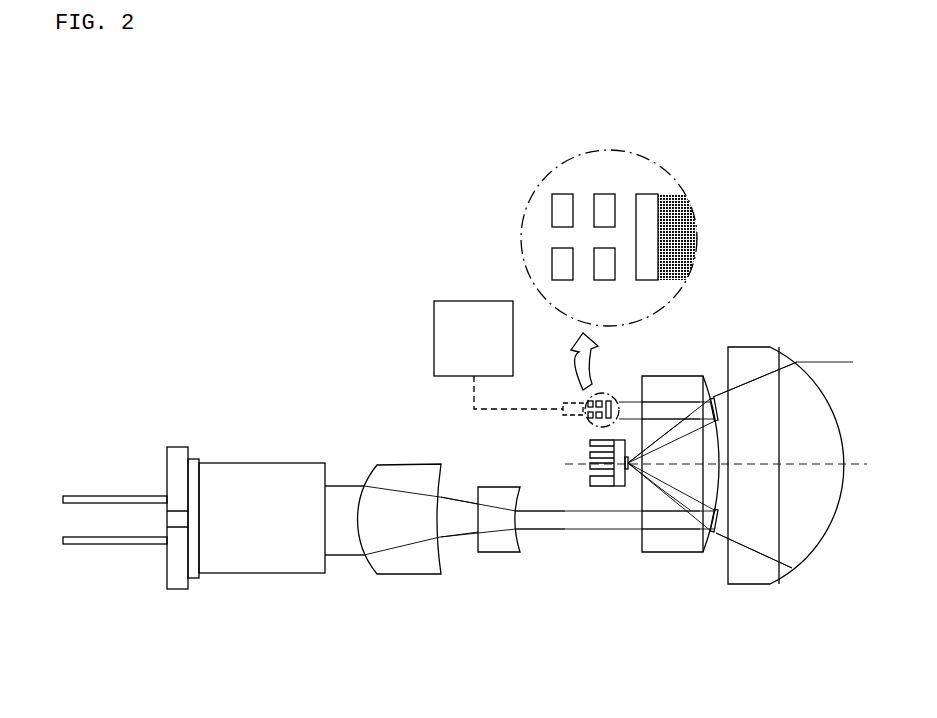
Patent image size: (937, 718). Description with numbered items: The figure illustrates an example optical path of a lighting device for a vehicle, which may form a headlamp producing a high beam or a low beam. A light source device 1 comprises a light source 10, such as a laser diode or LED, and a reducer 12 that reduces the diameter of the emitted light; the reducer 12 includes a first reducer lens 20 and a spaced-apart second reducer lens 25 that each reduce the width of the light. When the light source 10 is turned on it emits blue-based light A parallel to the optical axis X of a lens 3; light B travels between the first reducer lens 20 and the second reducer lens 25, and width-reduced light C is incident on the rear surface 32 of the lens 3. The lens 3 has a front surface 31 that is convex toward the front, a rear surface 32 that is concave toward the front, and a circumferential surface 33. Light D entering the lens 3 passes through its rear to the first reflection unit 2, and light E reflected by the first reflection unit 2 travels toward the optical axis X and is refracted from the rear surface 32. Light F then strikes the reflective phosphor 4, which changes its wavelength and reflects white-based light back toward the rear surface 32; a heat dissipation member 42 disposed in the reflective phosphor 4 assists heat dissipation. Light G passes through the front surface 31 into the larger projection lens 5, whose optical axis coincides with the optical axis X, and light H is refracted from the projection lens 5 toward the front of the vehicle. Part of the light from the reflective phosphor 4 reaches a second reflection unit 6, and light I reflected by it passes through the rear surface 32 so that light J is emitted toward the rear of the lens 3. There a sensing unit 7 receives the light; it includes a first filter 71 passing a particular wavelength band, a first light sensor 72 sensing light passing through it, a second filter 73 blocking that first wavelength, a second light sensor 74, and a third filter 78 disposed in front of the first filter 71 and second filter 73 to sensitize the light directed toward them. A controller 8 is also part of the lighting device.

The light source device 1 is at (382, 366).
The light source 10 is at (312, 444).
The reducer 12 is at (382, 445).
The first reducer lens 20 is at (402, 573).
The second reducer lens 25 is at (500, 548).
The first reflection unit 2 is at (717, 532).
The lens 3 is at (667, 504).
The front surface 31 is at (705, 551).
The rear surface 32 is at (641, 553).
The circumferential surface 33 is at (688, 553).
The reflective phosphor 4 is at (581, 469).
The heat dissipation member 42 is at (590, 448).
The projection lens 5 is at (765, 493).
The second reflection unit 6 is at (716, 397).
The sensing unit 7 is at (590, 213).
The first filter 71 is at (604, 194).
The first light sensor 72 is at (557, 208).
The second filter 73 is at (605, 280).
The second light sensor 74 is at (557, 263).
The third filter 78 is at (646, 194).
The controller 8 is at (447, 306).
The blue-based light A is at (344, 548).
The light emitted toward the light exit surface of the first reducer lens B is at (456, 536).
The light having a reduced width C is at (554, 528).
The light incident on the rear surface of the lens D is at (657, 523).
The light reflected by the first reflection unit E is at (656, 490).
The light refracted from the rear surface of the lens F is at (631, 480).
The light passing through the lens G is at (693, 444).
The light emitted toward the front of the vehicle H is at (831, 373).
The light reflected by the second reflection unit I is at (670, 405).
The light emitted toward the rear of the lens J is at (620, 400).
The optical axis X is at (725, 467).